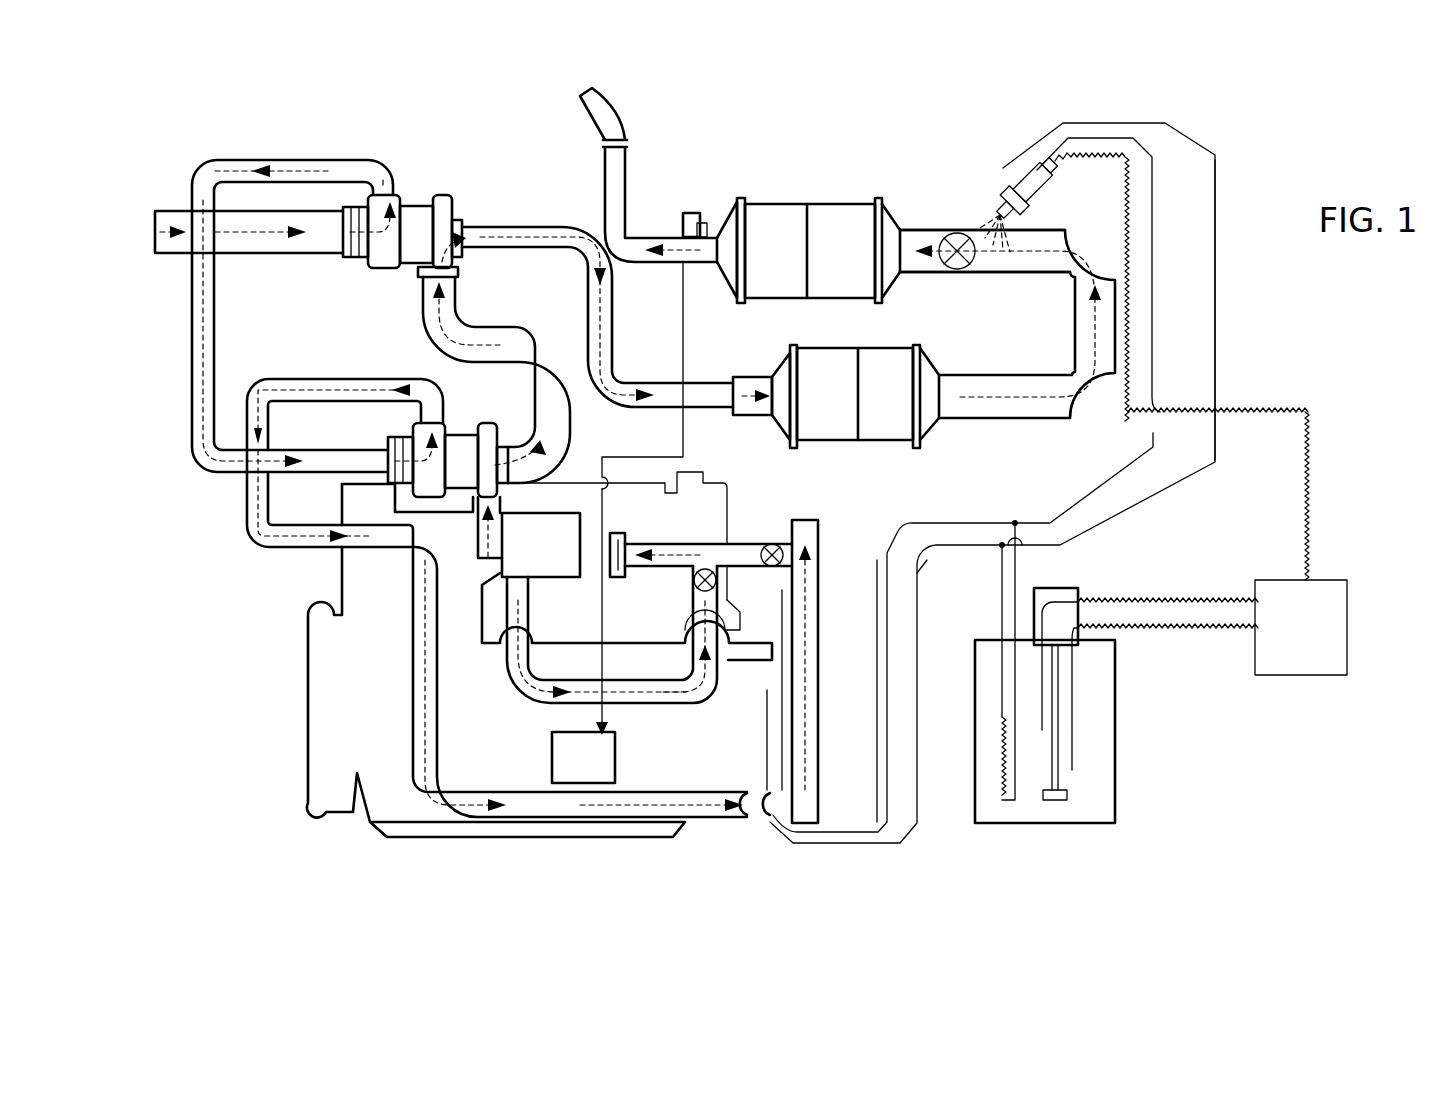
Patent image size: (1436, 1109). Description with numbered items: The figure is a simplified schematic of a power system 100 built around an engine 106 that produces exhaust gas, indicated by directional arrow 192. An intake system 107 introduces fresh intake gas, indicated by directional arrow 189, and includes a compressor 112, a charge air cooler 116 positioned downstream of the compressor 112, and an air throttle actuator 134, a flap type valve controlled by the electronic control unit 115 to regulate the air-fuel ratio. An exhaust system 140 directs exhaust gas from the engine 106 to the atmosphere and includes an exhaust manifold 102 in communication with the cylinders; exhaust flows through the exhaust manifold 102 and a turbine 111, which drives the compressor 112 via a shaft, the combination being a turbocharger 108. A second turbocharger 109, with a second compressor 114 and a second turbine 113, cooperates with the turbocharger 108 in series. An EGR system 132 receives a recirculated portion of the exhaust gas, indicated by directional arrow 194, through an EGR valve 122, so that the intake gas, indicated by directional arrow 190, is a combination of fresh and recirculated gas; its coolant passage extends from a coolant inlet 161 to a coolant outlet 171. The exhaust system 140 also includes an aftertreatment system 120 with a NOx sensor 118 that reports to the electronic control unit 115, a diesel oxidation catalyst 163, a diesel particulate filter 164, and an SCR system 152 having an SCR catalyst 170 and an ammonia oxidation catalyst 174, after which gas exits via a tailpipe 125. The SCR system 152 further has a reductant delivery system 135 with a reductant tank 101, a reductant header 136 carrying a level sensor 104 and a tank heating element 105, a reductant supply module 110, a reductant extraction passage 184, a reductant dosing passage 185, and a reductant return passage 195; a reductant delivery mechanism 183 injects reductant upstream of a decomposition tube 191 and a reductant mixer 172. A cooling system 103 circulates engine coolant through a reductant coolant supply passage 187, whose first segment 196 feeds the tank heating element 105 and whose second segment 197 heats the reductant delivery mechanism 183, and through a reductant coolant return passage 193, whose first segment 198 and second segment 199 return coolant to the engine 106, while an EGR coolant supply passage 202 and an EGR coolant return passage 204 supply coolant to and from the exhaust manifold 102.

The power system 100 is at (780, 875).
The reductant tank 101 is at (1115, 715).
The exhaust manifold 102 is at (541, 545).
The cooling system 103 is at (757, 847).
The level sensor 104 is at (1055, 803).
The tank heating element 105 is at (1000, 800).
The engine 106 is at (475, 862).
The intake system 107 is at (215, 140).
The turbocharger 108 is at (416, 190).
The second turbocharger 109 is at (462, 408).
The reductant supply module 110 is at (1318, 676).
The turbine 111 is at (458, 215).
The compressor 112 is at (403, 193).
The second turbine 113 is at (488, 423).
The second compressor 114 is at (430, 500).
The electronic control unit 115 is at (552, 768).
The charge air cooler 116 is at (818, 690).
The NOx sensor 118 is at (714, 212).
The aftertreatment system 120 is at (800, 125).
The EGR valve 122 is at (693, 580).
The tailpipe 125 is at (585, 138).
The EGR system 132 is at (690, 705).
The air throttle actuator 134 is at (772, 543).
The reductant delivery system 135 is at (1220, 790).
The reductant header 136 is at (1050, 588).
The exhaust system 140 is at (845, 125).
The SCR system 152 is at (1235, 118).
The coolant inlet 161 is at (480, 575).
The diesel oxidation catalyst 163 is at (833, 442).
The diesel particulate filter 164 is at (883, 442).
The SCR catalyst 170 is at (862, 200).
The coolant outlet 171 is at (588, 553).
The reductant mixer 172 is at (958, 232).
The ammonia oxidation catalyst 174 is at (798, 200).
The reductant delivery mechanism 183 is at (1010, 190).
The reductant extraction passage 184 is at (1165, 632).
The reductant dosing passage 185 is at (1312, 490).
The reductant coolant supply passage 187 is at (1240, 388).
The directional arrow (fresh intake gas) 189 is at (164, 230).
The directional arrow (intake gas) 190 is at (690, 552).
The decomposition tube 191 is at (980, 275).
The directional arrow (exhaust gas) 192 is at (1078, 419).
The reductant coolant return passage 193 is at (888, 535).
The directional arrow (recirculated exhaust gas) 194 is at (668, 700).
The reductant return passage 195 is at (1165, 600).
The first segment of reductant coolant supply passage 196 is at (915, 830).
The second segment of reductant coolant supply passage 197 is at (1215, 293).
The first segment of reductant coolant return passage 198 is at (1165, 362).
The second segment of reductant coolant return passage 199 is at (1015, 522).
The EGR coolant supply passage 202 is at (480, 627).
The EGR coolant return passage 204 is at (677, 622).